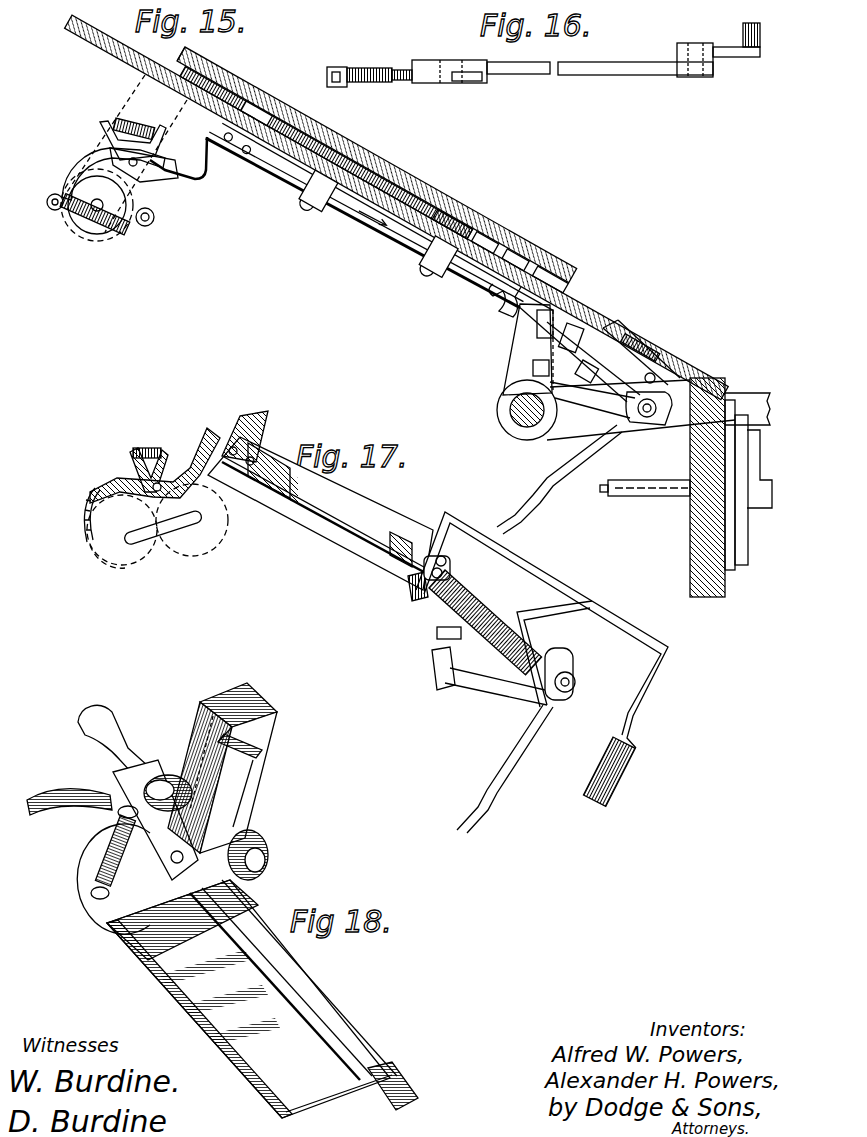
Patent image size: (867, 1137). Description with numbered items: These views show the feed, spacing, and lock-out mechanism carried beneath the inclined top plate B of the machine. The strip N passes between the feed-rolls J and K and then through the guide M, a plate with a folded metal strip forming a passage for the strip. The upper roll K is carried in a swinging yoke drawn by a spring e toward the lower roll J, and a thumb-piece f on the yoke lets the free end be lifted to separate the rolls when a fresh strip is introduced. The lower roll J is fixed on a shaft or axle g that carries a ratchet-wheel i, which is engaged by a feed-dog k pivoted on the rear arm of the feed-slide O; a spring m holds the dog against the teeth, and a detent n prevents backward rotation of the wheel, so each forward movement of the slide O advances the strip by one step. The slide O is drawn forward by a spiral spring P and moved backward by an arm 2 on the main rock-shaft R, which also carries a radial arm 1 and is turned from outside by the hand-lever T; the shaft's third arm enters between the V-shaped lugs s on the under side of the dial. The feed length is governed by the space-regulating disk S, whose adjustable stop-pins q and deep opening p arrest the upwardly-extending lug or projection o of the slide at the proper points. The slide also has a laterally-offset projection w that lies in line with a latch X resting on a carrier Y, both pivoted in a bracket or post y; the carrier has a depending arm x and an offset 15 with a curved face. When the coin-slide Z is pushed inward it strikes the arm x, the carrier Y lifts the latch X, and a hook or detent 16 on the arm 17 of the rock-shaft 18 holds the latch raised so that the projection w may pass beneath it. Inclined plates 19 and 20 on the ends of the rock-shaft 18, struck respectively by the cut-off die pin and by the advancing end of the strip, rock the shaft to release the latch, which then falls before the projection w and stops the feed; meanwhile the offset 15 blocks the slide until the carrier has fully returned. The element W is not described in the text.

In FIG. 15, the top plate B is at (397, 207).
In FIG. 15, the space-regulating disk S is at (385, 151).
In FIG. 15, the lugs s is at (519, 262).
In FIG. 15, the adjustable stop-pins q is at (326, 153).
In FIG. 15, the opening p is at (384, 223).
In FIG. 15, the lug or projection o is at (365, 219).
In FIG. 16, the lug or projection o is at (462, 82).
In FIG. 17, the lug or projection o is at (262, 424).
In FIG. 16, the feed-slide O is at (623, 58).
In FIG. 17, the feed-slide O is at (320, 513).
In FIG. 15, the sliding block t is at (377, 226).
In FIG. 15, the ratchet-wheel i is at (78, 182).
In FIG. 17, the ratchet-wheel i is at (97, 560).
In FIG. 18, the ratchet-wheel i is at (252, 838).
In FIG. 15, the shaft or axle g is at (107, 203).
In FIG. 17, the shaft or axle g is at (158, 535).
In FIG. 18, the shaft or axle g is at (94, 896).
In FIG. 15, the spring e is at (63, 207).
In FIG. 18, the spring e is at (95, 843).
In FIG. 15, the detent n is at (124, 247).
In FIG. 18, the detent n is at (266, 732).
In FIG. 15, the feed-dog k is at (90, 158).
In FIG. 16, the feed-dog k is at (338, 66).
In FIG. 17, the feed-dog k is at (90, 510).
In FIG. 15, the spring m is at (127, 128).
In FIG. 16, the spring m is at (372, 82).
In FIG. 17, the spring m is at (146, 450).
In FIG. 15, the hand-lever T is at (747, 394).
In FIG. 15, the coin-slide Z is at (600, 488).
In FIG. 15, the rock-shaft R is at (497, 410).
In FIG. 15, the carrier Y is at (641, 410).
In FIG. 17, the carrier Y is at (488, 690).
In FIG. 15, the bracket or post y is at (658, 393).
In FIG. 17, the bracket or post y is at (573, 673).
In FIG. 15, the latch X is at (598, 353).
In FIG. 17, the latch X is at (554, 654).
In FIG. 15, the depending arm x is at (548, 474).
In FIG. 17, the depending arm x is at (512, 752).
In FIG. 15, the projection w is at (568, 336).
In FIG. 16, the projection w is at (739, 35).
In FIG. 17, the projection w is at (437, 632).
In FIG. 15, the spring clip W is at (505, 300).
In FIG. 15, the spiral spring P is at (485, 292).
In FIG. 15, the radial arm 1 is at (536, 345).
In FIG. 15, the arm 2 is at (535, 327).
In FIG. 15, the offset 15 is at (532, 368).
In FIG. 17, the offset 15 is at (438, 680).
In FIG. 15, the hook or detent 16 is at (592, 364).
In FIG. 17, the hook or detent 16 is at (490, 612).
In FIG. 15, the arm 17 is at (634, 341).
In FIG. 17, the rock-shaft 18 is at (542, 630).
In FIG. 17, the inclined plate 19 is at (410, 592).
In FIG. 17, the inclined plate 20 is at (618, 775).
In FIG. 17, the feed-roll K is at (222, 478).
In FIG. 18, the feed-roll K is at (172, 760).
In FIG. 17, the feed-roll J is at (225, 532).
In FIG. 18, the feed-roll J is at (80, 870).
In FIG. 18, the thumb-piece f is at (105, 712).
In FIG. 18, the guide M is at (252, 999).
In FIG. 18, the strip N is at (400, 1086).